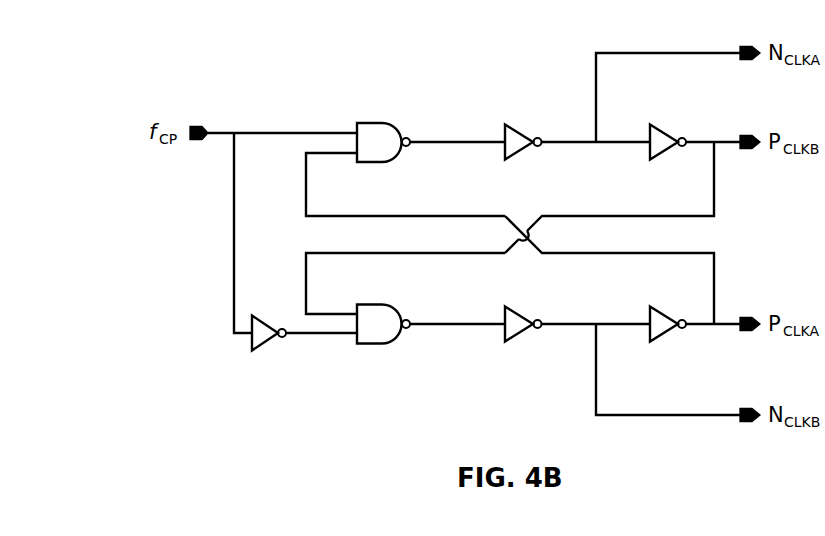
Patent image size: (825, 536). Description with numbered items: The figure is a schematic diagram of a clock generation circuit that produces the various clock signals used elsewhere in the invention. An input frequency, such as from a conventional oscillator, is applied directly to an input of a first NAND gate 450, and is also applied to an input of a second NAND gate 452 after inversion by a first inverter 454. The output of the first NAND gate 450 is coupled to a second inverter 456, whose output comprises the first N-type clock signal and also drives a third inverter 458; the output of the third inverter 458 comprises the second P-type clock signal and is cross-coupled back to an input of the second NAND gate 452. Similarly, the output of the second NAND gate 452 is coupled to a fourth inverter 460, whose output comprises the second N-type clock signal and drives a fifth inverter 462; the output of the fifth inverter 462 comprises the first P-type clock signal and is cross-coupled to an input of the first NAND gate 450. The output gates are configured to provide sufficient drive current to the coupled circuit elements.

The first NAND gate 450 is at (383, 122).
The second NAND gate 452 is at (383, 345).
The first inverter 454 is at (268, 349).
The second inverter 456 is at (517, 123).
The third inverter 458 is at (661, 123).
The fourth inverter 460 is at (515, 344).
The fifth inverter 462 is at (660, 344).